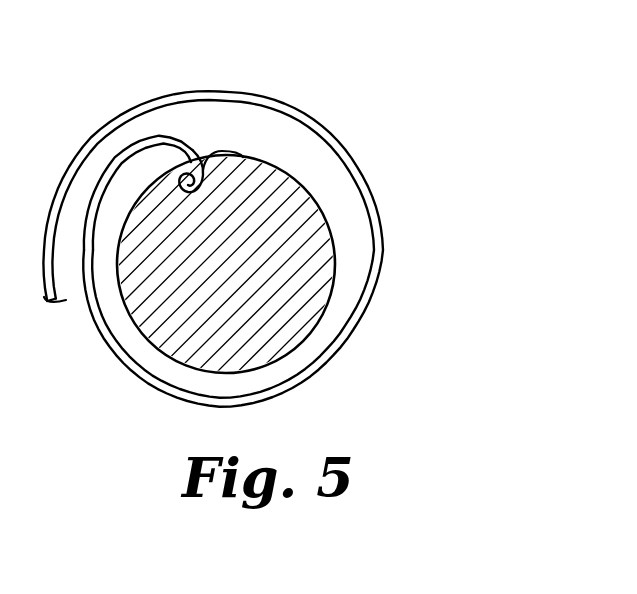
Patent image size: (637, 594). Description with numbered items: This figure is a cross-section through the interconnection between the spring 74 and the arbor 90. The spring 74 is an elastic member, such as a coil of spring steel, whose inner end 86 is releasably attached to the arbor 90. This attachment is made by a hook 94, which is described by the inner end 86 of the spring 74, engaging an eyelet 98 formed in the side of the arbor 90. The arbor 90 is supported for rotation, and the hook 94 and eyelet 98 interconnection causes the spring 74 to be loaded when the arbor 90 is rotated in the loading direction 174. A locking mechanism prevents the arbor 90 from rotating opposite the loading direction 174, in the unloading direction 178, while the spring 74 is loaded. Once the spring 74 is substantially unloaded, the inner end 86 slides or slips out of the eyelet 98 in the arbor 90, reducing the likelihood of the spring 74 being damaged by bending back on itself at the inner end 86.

The spring 74 is at (331, 358).
The inner end 86 is at (168, 128).
The arbor 90 is at (193, 350).
The hook 94 is at (198, 147).
The eyelet 98 is at (230, 149).
The loading direction 174 is at (388, 147).
The unloading direction 178 is at (401, 303).